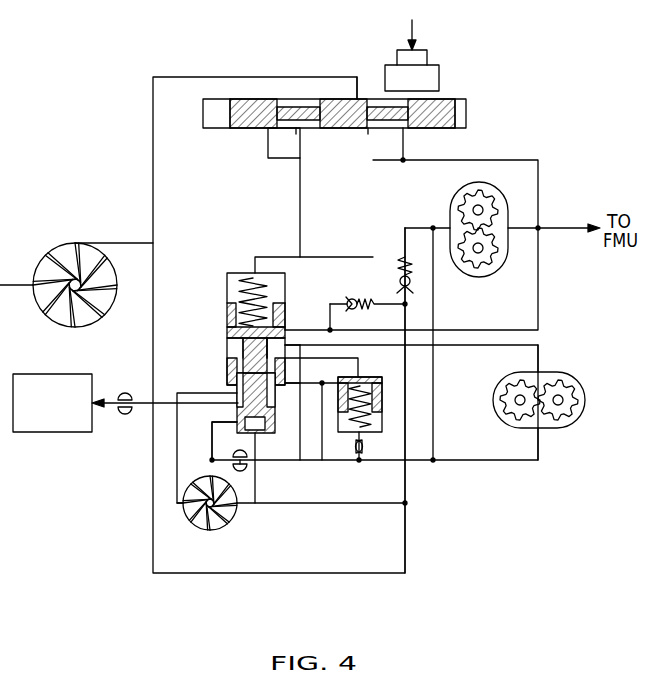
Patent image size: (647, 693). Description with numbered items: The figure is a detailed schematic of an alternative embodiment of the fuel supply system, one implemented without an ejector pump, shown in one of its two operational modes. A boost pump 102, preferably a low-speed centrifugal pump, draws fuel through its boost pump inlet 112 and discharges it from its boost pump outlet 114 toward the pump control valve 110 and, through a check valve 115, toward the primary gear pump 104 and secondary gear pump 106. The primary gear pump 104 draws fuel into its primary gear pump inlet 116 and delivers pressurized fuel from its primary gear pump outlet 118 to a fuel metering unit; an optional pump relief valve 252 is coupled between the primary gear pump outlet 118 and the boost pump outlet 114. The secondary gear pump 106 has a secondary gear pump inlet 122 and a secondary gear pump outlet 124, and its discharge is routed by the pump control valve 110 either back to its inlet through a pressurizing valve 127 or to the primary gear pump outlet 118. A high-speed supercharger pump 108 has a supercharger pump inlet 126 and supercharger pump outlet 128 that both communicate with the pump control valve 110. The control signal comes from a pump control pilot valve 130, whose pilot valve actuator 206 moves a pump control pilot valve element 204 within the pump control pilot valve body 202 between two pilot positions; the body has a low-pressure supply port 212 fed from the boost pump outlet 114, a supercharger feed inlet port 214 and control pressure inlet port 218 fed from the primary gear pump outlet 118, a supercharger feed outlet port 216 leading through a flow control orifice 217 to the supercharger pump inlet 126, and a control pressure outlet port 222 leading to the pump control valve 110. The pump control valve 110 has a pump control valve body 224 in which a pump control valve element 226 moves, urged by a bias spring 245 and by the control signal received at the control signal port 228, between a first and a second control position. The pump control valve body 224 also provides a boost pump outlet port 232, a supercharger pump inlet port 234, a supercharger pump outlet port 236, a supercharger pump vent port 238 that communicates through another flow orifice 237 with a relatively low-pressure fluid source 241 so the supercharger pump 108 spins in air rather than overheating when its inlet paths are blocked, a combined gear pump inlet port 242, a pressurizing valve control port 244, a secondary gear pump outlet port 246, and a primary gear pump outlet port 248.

The pump control pilot valve 130 is at (374, 294).
The pump control pilot valve body 202 is at (367, 80).
The pump control pilot valve element 204 is at (340, 112).
The low-pressure supply port 212 is at (357, 82).
The pilot valve actuator 206 is at (433, 56).
The supercharger feed inlet port 214 is at (268, 148).
The supercharger feed outlet port 216 is at (296, 132).
The control pressure outlet port 222 is at (368, 132).
The control pressure inlet port 218 is at (403, 130).
The primary gear pump 104 is at (450, 200).
The primary gear pump inlet 116 is at (450, 222).
The primary gear pump outlet 118 is at (508, 218).
The check valve 115 is at (411, 284).
The pump relief valve 252 is at (375, 308).
The secondary gear pump 106 is at (493, 410).
The secondary gear pump outlet 124 is at (540, 372).
The secondary gear pump inlet 122 is at (540, 428).
The pressurizing valve 127 is at (382, 400).
The pump control valve 110 is at (268, 342).
The control signal port 228 is at (255, 270).
The bias spring 245 is at (240, 290).
The pump control valve body 224 is at (228, 308).
The pump control valve element 226 is at (228, 332).
The primary gear pump outlet port 248 is at (290, 323).
The supercharger pump outlet port 236 is at (237, 392).
The boost pump outlet port 232 is at (255, 433).
The pressurizing valve control port 244 is at (286, 360).
The secondary gear pump outlet port 246 is at (300, 338).
The combined gear pump inlet port 242 is at (285, 385).
The low pressure source 241 is at (52, 432).
The supercharger pump vent port 238 is at (220, 405).
The flow orifice 237 is at (123, 390).
The supercharger pump inlet port 234 is at (212, 427).
The supercharger pump inlet 126 is at (182, 492).
The boost pump 102 is at (48, 252).
The boost pump outlet 114 is at (98, 243).
The boost pump inlet 112 is at (35, 292).
The supercharger pump 108 is at (225, 527).
The supercharger pump outlet 128 is at (190, 512).
The flow control orifice 217 is at (243, 475).